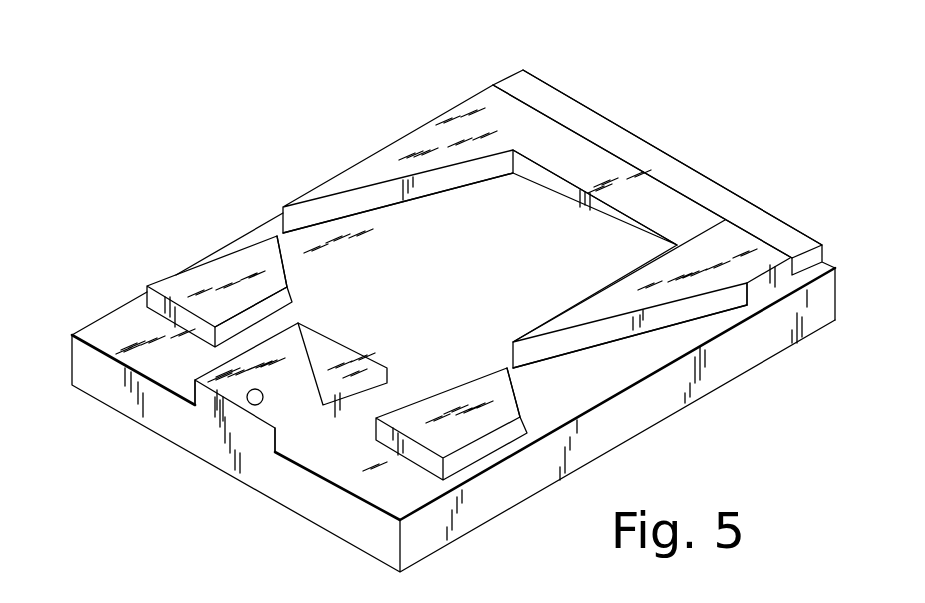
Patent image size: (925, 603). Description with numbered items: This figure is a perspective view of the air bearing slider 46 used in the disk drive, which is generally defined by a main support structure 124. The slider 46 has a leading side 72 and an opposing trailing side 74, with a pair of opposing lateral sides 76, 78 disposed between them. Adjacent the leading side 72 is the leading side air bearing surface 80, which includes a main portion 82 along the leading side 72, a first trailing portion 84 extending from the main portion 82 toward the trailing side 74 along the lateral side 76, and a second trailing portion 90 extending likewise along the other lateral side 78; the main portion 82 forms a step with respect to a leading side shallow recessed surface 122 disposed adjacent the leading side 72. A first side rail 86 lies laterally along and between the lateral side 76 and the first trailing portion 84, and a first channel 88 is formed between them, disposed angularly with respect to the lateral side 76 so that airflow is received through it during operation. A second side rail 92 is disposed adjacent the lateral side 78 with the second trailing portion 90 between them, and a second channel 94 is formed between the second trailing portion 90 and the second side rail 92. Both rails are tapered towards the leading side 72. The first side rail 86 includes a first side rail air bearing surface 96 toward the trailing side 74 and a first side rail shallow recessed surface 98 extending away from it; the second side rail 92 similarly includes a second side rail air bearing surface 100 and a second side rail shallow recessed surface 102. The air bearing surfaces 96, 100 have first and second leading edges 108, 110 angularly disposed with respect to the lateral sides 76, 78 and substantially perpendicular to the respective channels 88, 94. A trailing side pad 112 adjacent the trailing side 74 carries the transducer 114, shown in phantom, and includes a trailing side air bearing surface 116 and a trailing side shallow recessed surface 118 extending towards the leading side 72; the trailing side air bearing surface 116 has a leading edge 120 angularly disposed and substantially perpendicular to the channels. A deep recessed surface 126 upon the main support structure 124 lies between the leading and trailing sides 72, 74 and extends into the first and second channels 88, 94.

The air bearing slider 46 is at (213, 133).
The leading side 72 is at (753, 188).
The trailing side 74 is at (100, 383).
The lateral side 76 is at (723, 365).
The lateral side 78 is at (103, 315).
The leading side air bearing surface 80 is at (660, 195).
The main portion 82 is at (748, 258).
The first trailing portion 84 is at (595, 310).
The first side rail 86 is at (503, 410).
The first channel 88 is at (718, 326).
The second trailing portion 90 is at (345, 180).
The second side rail 92 is at (240, 263).
The second channel 94 is at (267, 227).
The first side rail air bearing surface 96 is at (452, 440).
The first side rail shallow recessed surface 98 is at (627, 348).
The second side rail air bearing surface 100 is at (187, 282).
The second side rail shallow recessed surface 102 is at (380, 222).
The first leading edge 108 is at (520, 404).
The second leading edge 110 is at (290, 270).
The trailing side pad 112 is at (288, 378).
The transducer 114 is at (247, 410).
The trailing side air bearing surface 116 is at (200, 383).
The trailing side shallow recessed surface 118 is at (348, 360).
The leading edge 120 is at (318, 400).
The leading side shallow recessed surface 122 is at (598, 128).
The main support structure 124 is at (833, 303).
The deep recessed surface 126 is at (510, 207).